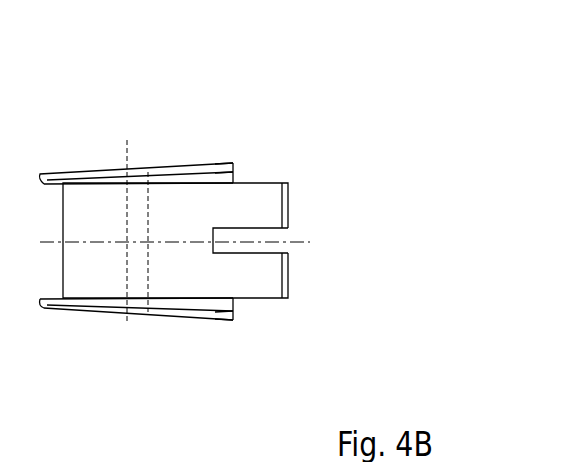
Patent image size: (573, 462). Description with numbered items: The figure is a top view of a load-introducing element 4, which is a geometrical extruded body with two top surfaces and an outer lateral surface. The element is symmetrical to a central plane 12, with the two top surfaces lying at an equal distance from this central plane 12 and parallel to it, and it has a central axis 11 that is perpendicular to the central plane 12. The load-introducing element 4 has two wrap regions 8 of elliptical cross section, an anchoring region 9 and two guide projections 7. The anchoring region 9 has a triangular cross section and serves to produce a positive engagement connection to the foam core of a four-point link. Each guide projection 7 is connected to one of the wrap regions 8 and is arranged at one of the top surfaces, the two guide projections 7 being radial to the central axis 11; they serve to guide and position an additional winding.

The load-introducing element 4 is at (122, 340).
The guide projection 7 is at (225, 160).
The wrap region 8 is at (183, 172).
The anchoring region 9 is at (270, 210).
The central axis 11 is at (127, 155).
The central plane 12 is at (302, 242).